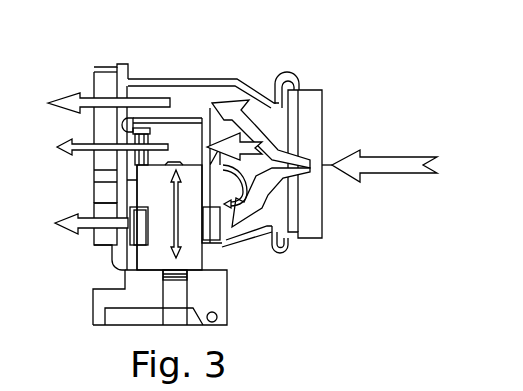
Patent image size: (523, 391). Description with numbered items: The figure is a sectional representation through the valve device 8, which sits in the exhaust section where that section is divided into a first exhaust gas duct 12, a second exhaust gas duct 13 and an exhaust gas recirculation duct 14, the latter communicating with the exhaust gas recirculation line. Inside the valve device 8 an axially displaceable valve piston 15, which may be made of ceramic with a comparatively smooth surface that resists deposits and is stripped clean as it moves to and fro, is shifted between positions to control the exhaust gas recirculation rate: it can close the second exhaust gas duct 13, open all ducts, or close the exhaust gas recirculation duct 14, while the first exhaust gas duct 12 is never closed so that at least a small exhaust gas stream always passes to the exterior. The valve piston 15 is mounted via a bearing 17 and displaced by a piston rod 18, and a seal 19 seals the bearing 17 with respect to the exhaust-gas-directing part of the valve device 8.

The valve device 8 is at (318, 68).
The first exhaust gas duct 12 is at (187, 103).
The second exhaust gas duct 13 is at (128, 153).
The exhaust gas recirculation duct 14 is at (110, 215).
The valve piston 15 is at (153, 193).
The bearing 17 is at (183, 290).
The piston rod 18 is at (213, 226).
The seal 19 is at (197, 272).